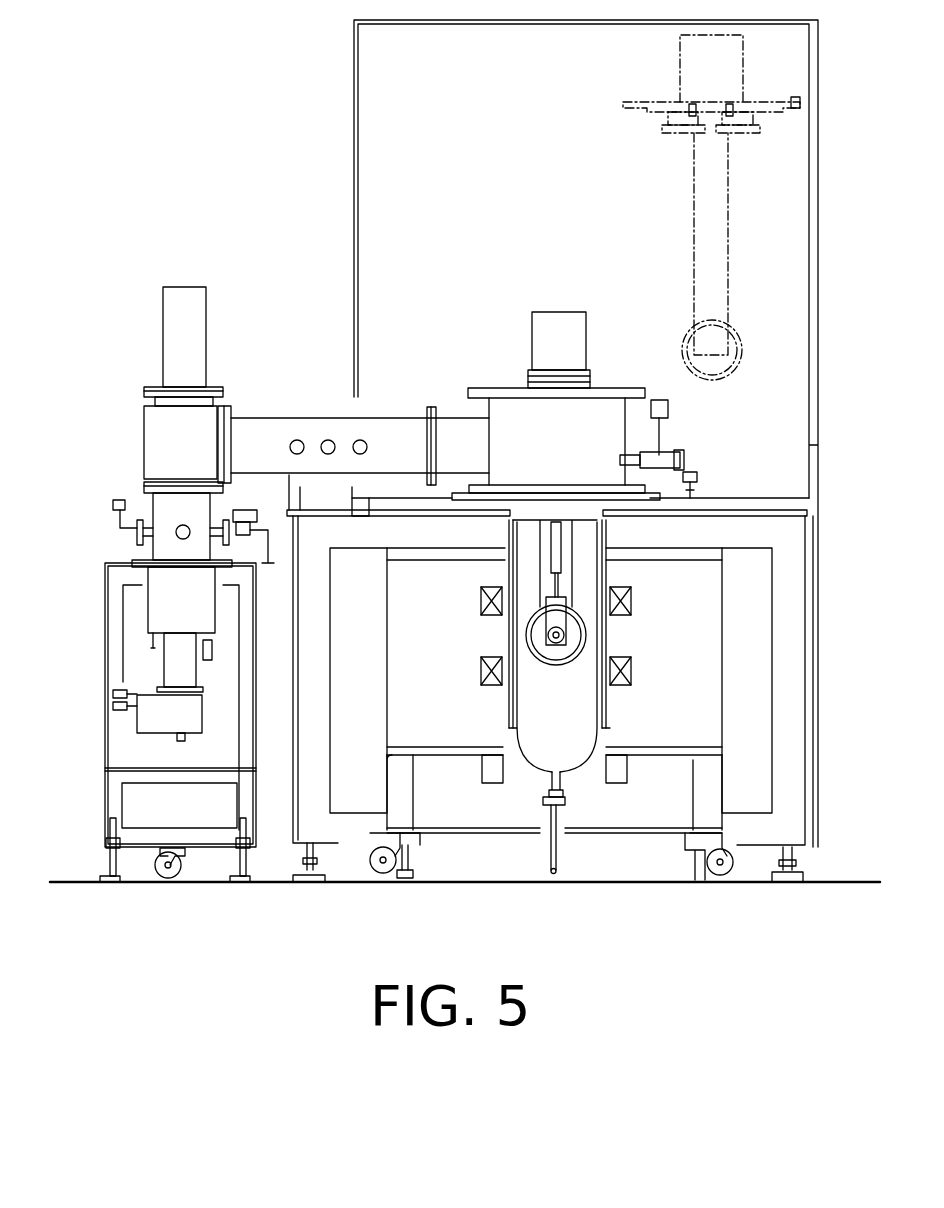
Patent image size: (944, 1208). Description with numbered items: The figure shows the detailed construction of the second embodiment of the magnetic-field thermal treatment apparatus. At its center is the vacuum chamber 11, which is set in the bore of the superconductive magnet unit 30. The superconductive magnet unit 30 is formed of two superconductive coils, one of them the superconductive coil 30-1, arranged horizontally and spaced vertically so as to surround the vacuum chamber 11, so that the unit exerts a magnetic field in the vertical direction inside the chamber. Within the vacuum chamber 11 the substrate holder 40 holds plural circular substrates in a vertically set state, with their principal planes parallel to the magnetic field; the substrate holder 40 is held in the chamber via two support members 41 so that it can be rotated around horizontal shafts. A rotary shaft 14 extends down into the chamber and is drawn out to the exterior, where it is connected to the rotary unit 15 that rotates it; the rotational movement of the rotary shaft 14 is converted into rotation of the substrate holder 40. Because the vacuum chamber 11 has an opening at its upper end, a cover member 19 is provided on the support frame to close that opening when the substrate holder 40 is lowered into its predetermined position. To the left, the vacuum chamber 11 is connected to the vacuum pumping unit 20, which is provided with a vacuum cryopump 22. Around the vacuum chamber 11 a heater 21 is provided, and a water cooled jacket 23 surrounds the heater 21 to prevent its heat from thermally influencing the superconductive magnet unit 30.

The vacuum chamber 11 is at (577, 765).
The rotary shaft 14 is at (563, 567).
The rotary unit 15 is at (586, 345).
The cover member 19 is at (496, 390).
The vacuum pumping unit 20 is at (131, 471).
The heater 21 is at (600, 688).
The vacuum cryopump 22 is at (165, 607).
The water cooled jacket 23 is at (515, 735).
The superconductive magnet unit 30 is at (585, 713).
The superconductive coil 30-1 is at (598, 638).
The substrate holder 40 is at (548, 665).
The support member 41 is at (605, 528).